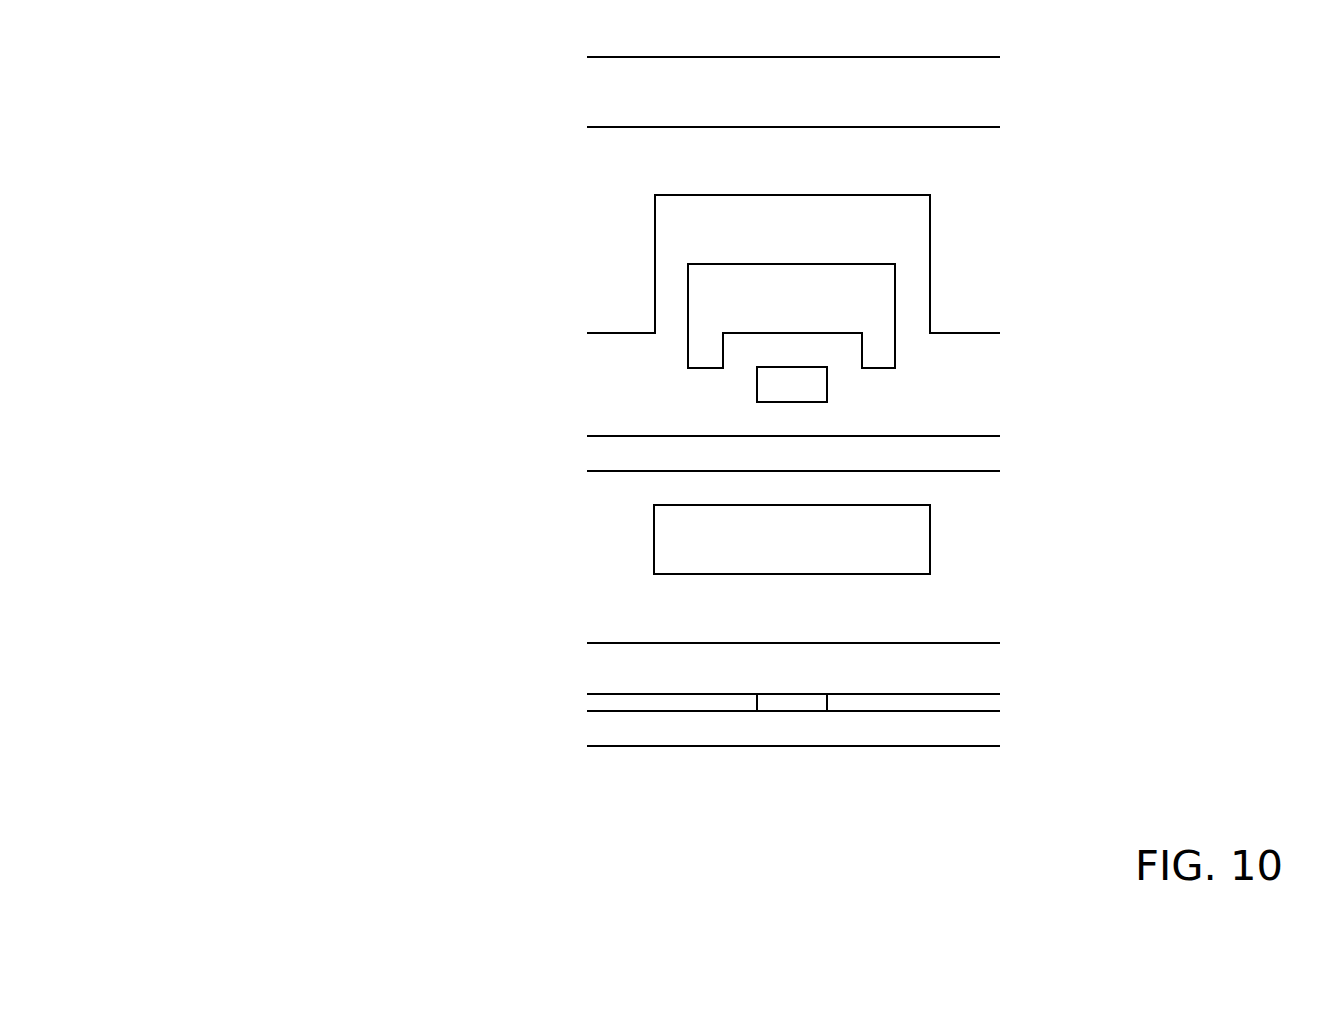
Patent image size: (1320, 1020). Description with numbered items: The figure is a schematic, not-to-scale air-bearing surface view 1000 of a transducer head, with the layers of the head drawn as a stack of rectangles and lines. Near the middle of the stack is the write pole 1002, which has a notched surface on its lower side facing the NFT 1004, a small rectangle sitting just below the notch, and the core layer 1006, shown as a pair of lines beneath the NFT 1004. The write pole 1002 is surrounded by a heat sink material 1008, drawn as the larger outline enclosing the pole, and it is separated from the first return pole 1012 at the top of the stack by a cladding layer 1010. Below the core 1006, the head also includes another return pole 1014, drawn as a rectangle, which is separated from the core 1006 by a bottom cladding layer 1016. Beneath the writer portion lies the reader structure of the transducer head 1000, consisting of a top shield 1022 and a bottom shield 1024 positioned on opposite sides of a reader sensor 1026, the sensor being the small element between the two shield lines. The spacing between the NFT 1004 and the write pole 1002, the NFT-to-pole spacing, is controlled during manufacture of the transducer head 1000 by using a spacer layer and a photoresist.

The air-bearing surface view 1000 is at (262, 100).
The write pole 1002 is at (713, 311).
The NFT 1004 is at (735, 381).
The core layer 1006 is at (600, 451).
The heat sink material 1008 is at (711, 225).
The cladding layer 1010 is at (710, 174).
The first return pole 1012 is at (710, 105).
The return pole 1014 is at (710, 550).
The bottom cladding layer 1016 is at (710, 609).
The top shield 1022 is at (600, 675).
The bottom shield 1024 is at (583, 727).
The reader sensor 1026 is at (804, 720).